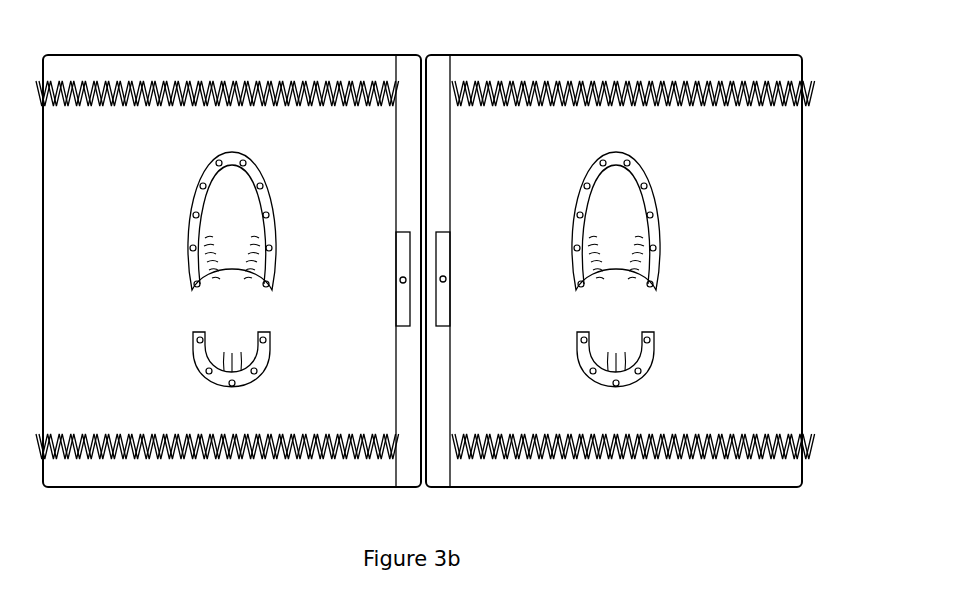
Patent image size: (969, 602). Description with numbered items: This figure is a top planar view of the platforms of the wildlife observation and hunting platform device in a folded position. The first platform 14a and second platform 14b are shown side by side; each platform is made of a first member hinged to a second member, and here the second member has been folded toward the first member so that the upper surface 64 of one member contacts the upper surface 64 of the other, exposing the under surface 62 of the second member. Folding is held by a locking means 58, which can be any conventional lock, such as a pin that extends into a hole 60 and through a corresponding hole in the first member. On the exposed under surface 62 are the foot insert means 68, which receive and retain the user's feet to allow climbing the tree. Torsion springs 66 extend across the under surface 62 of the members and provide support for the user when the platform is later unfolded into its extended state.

The second platform 14b is at (230, 72).
The first platform 14a is at (647, 67).
The torsion springs 66 is at (805, 90).
The foot insert means 68 is at (655, 231).
The under surface 62 is at (765, 363).
The upper surface 64 is at (440, 472).
The locking means 58 is at (444, 316).
The hole 60 is at (447, 273).